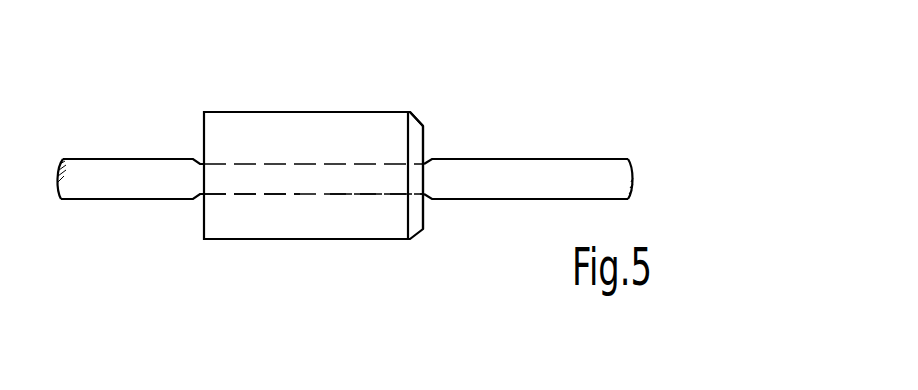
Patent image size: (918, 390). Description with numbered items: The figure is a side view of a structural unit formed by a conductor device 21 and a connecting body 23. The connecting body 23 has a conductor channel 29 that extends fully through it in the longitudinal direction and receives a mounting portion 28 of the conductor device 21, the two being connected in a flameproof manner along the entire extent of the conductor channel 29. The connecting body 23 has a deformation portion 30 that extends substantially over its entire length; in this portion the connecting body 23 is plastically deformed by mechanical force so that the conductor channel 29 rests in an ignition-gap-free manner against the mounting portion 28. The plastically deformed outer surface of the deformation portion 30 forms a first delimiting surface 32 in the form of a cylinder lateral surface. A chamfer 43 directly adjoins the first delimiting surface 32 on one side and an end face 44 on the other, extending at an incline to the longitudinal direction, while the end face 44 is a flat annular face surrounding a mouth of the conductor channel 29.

The conductor device 21 is at (126, 178).
The connecting body 23 is at (359, 120).
The mounting portion 28 is at (258, 189).
The conductor channel 29 is at (378, 193).
The deformation portion 30 is at (300, 94).
The first delimiting surface 32 is at (292, 240).
The chamfer 43 is at (416, 118).
The end face 44 is at (425, 143).